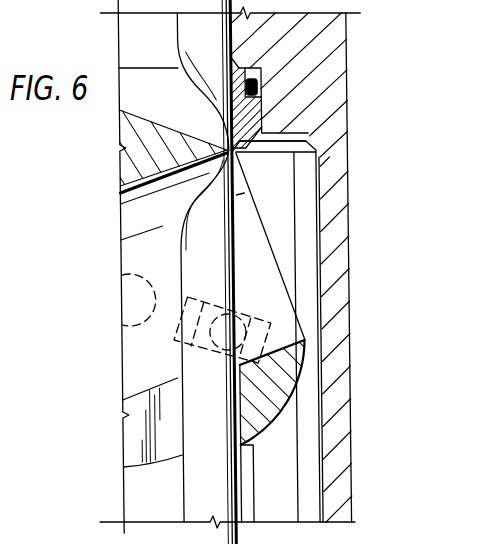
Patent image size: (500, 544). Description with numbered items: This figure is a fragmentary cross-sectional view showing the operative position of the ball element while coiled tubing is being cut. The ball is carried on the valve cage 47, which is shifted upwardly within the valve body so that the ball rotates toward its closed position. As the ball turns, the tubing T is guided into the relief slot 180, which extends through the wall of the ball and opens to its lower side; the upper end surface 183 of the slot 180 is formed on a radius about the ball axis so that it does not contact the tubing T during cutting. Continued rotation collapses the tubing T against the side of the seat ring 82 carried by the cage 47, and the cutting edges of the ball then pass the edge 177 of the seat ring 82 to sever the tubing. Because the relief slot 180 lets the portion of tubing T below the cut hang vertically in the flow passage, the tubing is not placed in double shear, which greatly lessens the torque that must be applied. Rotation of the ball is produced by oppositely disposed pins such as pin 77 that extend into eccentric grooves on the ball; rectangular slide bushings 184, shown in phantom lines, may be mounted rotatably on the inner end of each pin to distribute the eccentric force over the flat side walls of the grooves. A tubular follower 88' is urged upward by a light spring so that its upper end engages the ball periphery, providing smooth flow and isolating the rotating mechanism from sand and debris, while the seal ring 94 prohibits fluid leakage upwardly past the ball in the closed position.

The valve cage 47 is at (332, 30).
The seal ring 94 is at (261, 87).
The seat ring 82 is at (247, 115).
The edge of the seat ring 177 is at (306, 140).
The tubing T is at (218, 226).
The rectangular slide bushings 184 is at (220, 310).
The pin 77 is at (250, 335).
The upper end surface of the slot 183 is at (240, 400).
The tubular follower 88' is at (321, 483).
The relief slot 180 is at (130, 462).